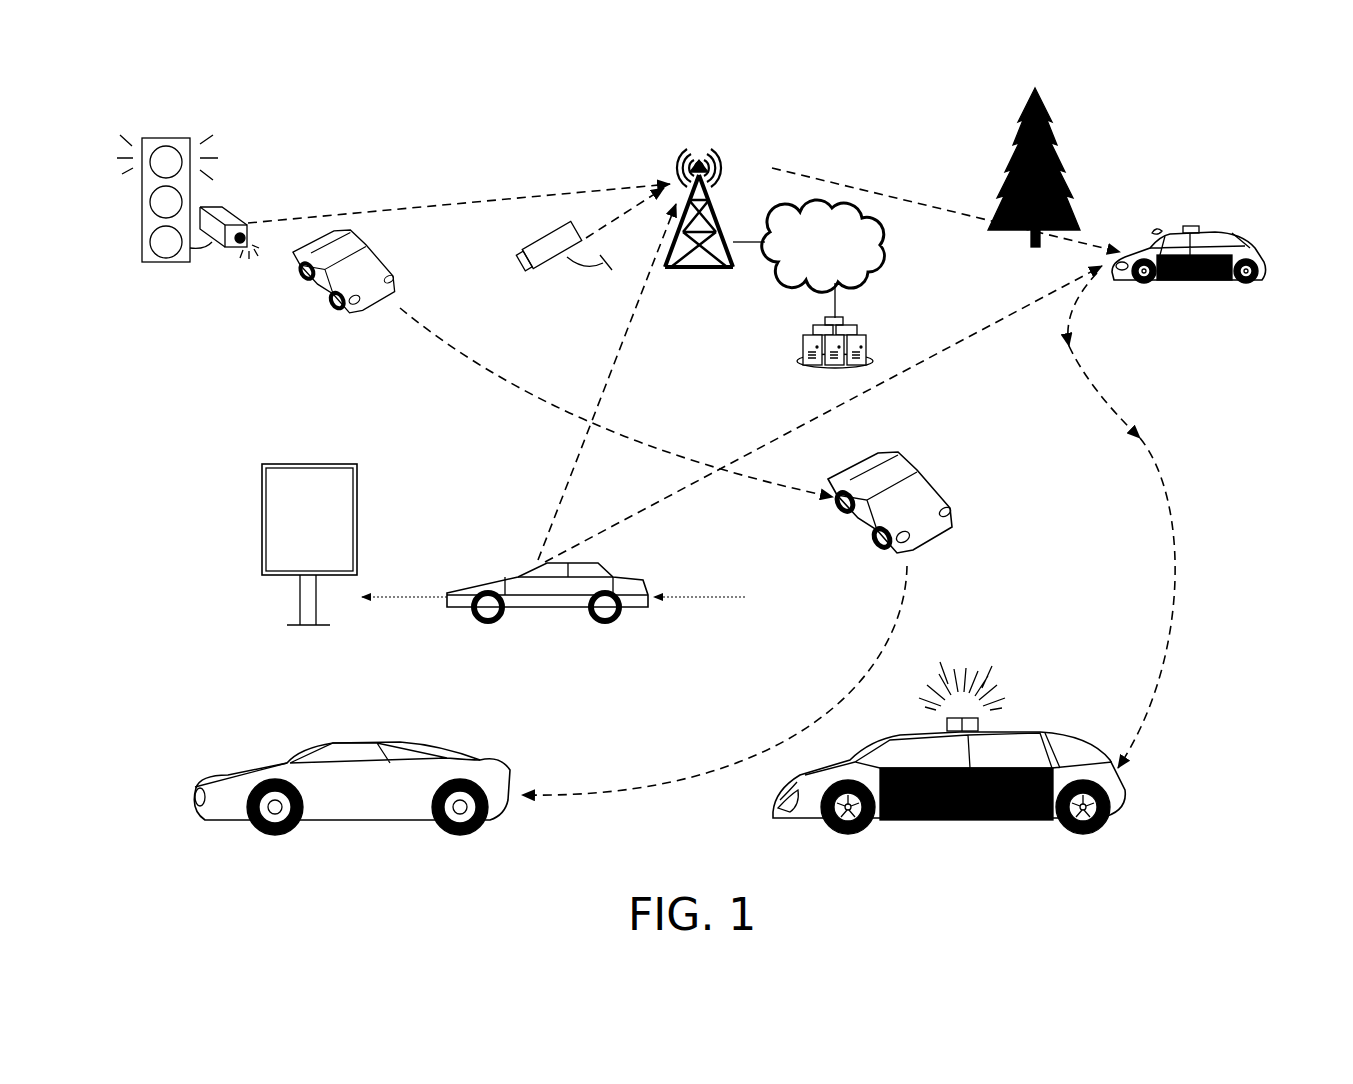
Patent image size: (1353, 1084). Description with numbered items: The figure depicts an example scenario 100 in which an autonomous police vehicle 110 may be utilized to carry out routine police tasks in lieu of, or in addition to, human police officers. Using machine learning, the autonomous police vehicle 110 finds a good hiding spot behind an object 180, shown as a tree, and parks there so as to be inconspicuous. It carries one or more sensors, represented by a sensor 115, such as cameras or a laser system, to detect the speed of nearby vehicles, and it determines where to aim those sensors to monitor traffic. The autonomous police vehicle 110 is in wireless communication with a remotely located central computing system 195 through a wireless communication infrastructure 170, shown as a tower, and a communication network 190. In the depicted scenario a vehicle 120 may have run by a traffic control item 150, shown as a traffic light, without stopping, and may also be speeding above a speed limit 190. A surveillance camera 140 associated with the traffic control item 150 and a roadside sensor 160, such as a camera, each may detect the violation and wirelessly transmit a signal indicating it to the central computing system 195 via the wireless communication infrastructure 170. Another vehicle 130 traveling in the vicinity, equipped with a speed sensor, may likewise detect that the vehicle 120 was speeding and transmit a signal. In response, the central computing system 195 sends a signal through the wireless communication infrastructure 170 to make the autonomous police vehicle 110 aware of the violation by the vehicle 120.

The scenario 100 is at (538, 118).
The autonomous police vehicle 110 is at (1208, 233).
The sensor 115 is at (1162, 228).
The vehicle 120 is at (388, 262).
The vehicle 130 is at (632, 578).
The surveillance camera 140 is at (222, 210).
The traffic control item 150 is at (178, 135).
The roadside sensor 160 is at (598, 273).
The wireless communication infrastructure 170 is at (677, 262).
The object 180 is at (1062, 165).
The communication network / speed limit 190 is at (280, 577).
The central computing system 195 is at (862, 332).